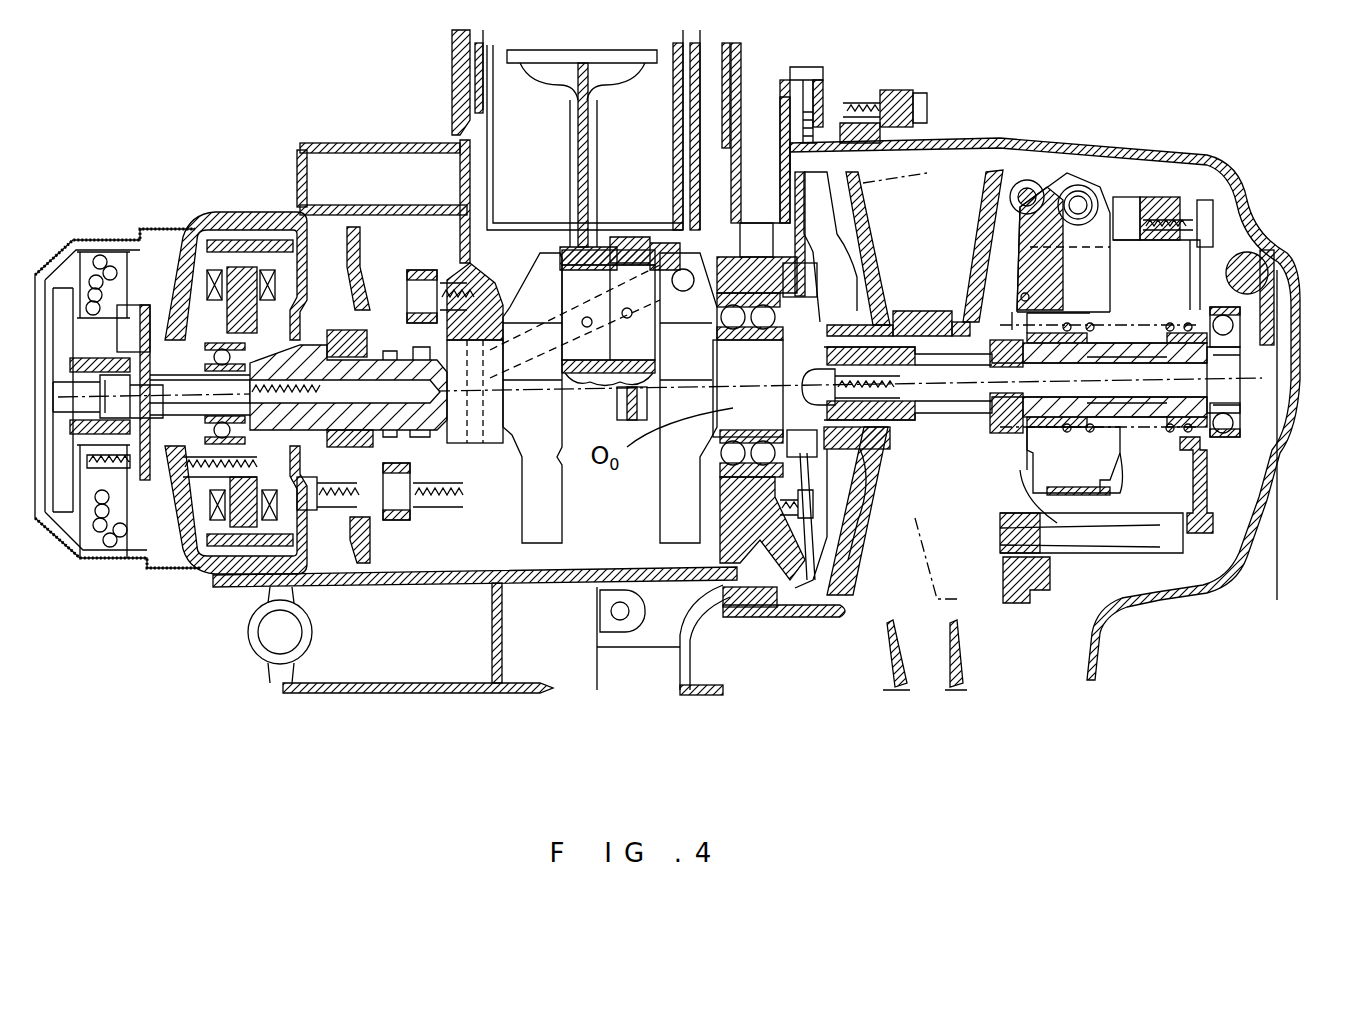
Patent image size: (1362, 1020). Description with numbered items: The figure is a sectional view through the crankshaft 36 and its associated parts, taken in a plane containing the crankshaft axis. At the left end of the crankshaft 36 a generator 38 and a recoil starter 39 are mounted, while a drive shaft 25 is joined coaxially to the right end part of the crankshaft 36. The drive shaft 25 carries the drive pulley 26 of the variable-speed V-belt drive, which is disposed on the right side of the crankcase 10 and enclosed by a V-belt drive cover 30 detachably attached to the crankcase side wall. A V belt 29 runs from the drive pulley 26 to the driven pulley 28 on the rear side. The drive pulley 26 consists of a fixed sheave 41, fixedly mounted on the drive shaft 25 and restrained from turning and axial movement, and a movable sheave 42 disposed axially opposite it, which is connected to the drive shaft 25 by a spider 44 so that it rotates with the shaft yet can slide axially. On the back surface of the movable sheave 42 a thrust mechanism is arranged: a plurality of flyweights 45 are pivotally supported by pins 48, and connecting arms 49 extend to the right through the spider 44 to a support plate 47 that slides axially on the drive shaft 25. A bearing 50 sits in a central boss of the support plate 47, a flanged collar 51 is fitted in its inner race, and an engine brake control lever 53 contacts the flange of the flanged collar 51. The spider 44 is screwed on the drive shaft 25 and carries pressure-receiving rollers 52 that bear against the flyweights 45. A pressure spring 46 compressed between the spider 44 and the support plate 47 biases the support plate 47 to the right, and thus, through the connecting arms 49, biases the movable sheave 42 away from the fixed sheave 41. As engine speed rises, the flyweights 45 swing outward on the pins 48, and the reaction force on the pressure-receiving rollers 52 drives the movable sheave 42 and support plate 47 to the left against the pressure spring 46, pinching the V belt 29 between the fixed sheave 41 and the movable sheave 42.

The crankcase 10 is at (370, 150).
The drive shaft 25 is at (927, 424).
The drive pulley 26 is at (973, 175).
The driven pulley 28 is at (870, 660).
The V belt 29 is at (922, 175).
The V-belt drive cover 30 is at (1213, 163).
The crankshaft 36 is at (683, 390).
The generator 38 is at (228, 228).
The recoil starter 39 is at (102, 247).
The fixed sheave 41 is at (864, 560).
The movable sheave 42 is at (990, 597).
The spider 44 is at (1113, 258).
The flyweights 45 is at (1055, 262).
The pressure spring 46 is at (1133, 433).
The support plate 47 is at (1207, 490).
The pins 48 is at (1032, 190).
The connecting arms 49 is at (1123, 205).
The bearing 50 is at (1240, 447).
The flanged collar 51 is at (1233, 420).
The pressure-receiving rollers 52 is at (1080, 203).
The engine brake control lever 53 is at (1273, 323).